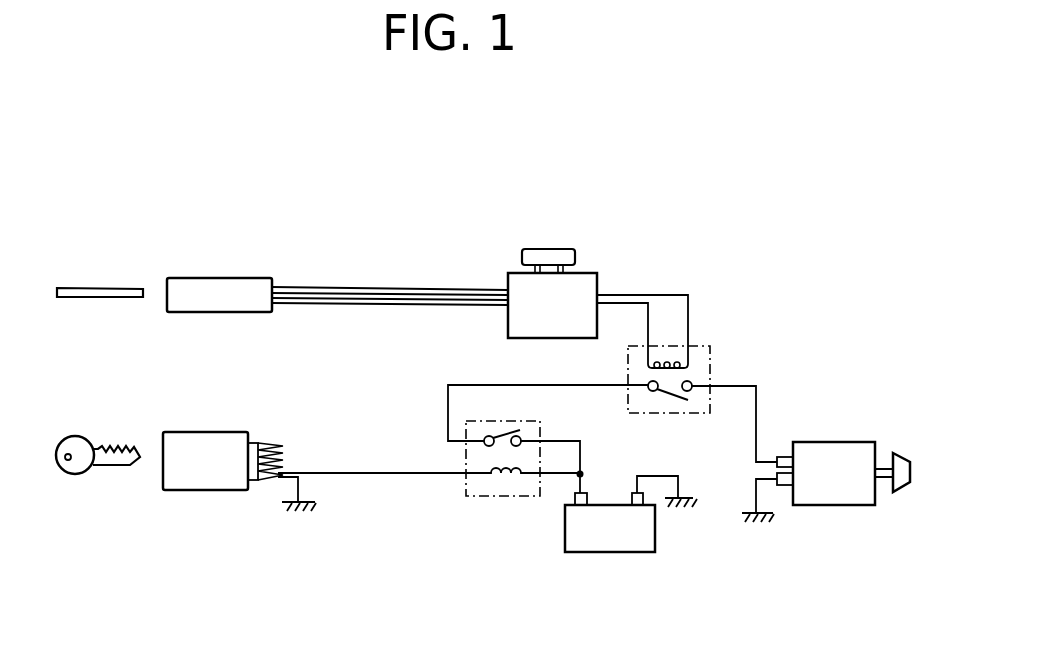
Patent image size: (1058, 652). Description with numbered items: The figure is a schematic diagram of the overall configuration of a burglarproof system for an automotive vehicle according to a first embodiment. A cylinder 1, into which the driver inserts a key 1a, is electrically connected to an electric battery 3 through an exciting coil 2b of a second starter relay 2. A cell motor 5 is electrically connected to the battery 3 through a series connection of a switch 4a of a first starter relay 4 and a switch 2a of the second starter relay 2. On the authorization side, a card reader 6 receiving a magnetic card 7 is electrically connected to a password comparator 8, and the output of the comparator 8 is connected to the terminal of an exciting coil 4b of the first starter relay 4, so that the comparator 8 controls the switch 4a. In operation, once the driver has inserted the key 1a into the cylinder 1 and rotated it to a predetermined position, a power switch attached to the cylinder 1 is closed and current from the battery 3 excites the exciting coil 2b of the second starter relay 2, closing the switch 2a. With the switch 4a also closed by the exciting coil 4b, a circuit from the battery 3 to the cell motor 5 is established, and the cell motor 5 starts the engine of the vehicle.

The cylinder 1 is at (183, 488).
The key 1a is at (77, 472).
The second starter relay 2 is at (475, 488).
The switch 2a is at (538, 423).
The exciting coil 2b is at (495, 478).
The electric battery 3 is at (605, 538).
The first starter relay 4 is at (700, 362).
The switch 4a is at (697, 392).
The exciting coil 4b is at (678, 358).
The cell motor 5 is at (817, 505).
The card reader 6 is at (257, 279).
The magnetic card 7 is at (115, 292).
The password comparator 8 is at (590, 285).